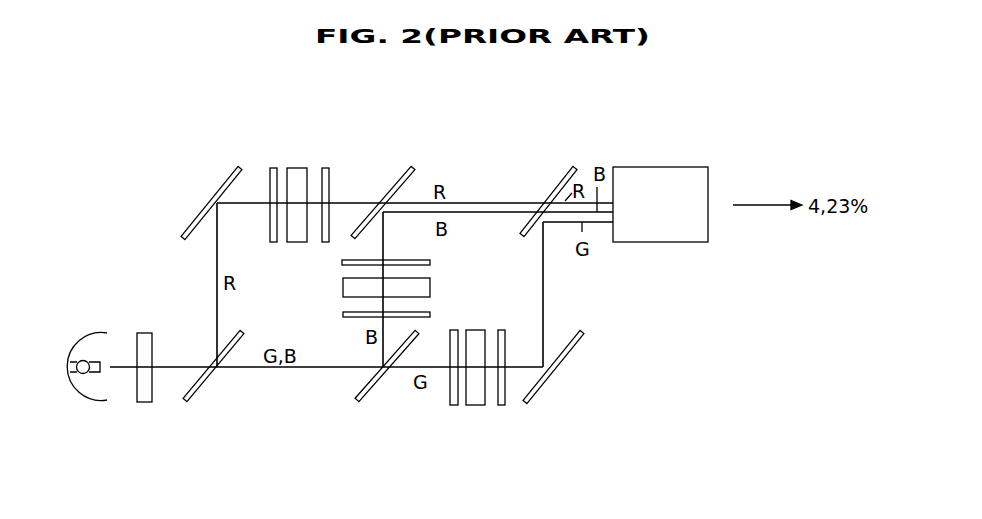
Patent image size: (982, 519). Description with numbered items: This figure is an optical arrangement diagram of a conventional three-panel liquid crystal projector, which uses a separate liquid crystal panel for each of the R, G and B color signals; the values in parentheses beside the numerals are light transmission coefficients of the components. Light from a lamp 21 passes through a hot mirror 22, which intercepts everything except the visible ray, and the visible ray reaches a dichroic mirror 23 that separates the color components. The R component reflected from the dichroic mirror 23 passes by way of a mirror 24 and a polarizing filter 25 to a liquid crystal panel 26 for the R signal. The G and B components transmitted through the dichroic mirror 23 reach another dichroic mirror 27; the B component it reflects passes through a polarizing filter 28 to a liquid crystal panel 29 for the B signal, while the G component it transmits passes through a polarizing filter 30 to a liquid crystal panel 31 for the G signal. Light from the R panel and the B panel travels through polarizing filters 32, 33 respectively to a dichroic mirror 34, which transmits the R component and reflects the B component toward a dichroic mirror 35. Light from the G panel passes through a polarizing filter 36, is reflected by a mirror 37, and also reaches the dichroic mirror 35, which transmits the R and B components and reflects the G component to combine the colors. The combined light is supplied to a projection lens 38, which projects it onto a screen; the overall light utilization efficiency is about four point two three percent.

The lamp 21 is at (97, 400).
The hot mirror 22 is at (144, 402).
The dichroic mirror 23 is at (197, 395).
The mirror 24 is at (190, 223).
The polarizing filter 25 is at (273, 168).
The liquid crystal panel 26 is at (297, 168).
The dichroic mirror 27 is at (365, 400).
The polarizing filter 28 is at (430, 313).
The liquid crystal panel 29 is at (430, 288).
The polarizing filter 30 is at (453, 405).
The liquid crystal panel 31 is at (476, 405).
The polarizing filter 32 is at (326, 168).
The polarizing filter 33 is at (430, 263).
The dichroic mirror 34 is at (410, 167).
The dichroic mirror 35 is at (553, 183).
The polarizing filter 36 is at (502, 405).
The mirror 37 is at (540, 388).
The projection lens 38 is at (653, 243).